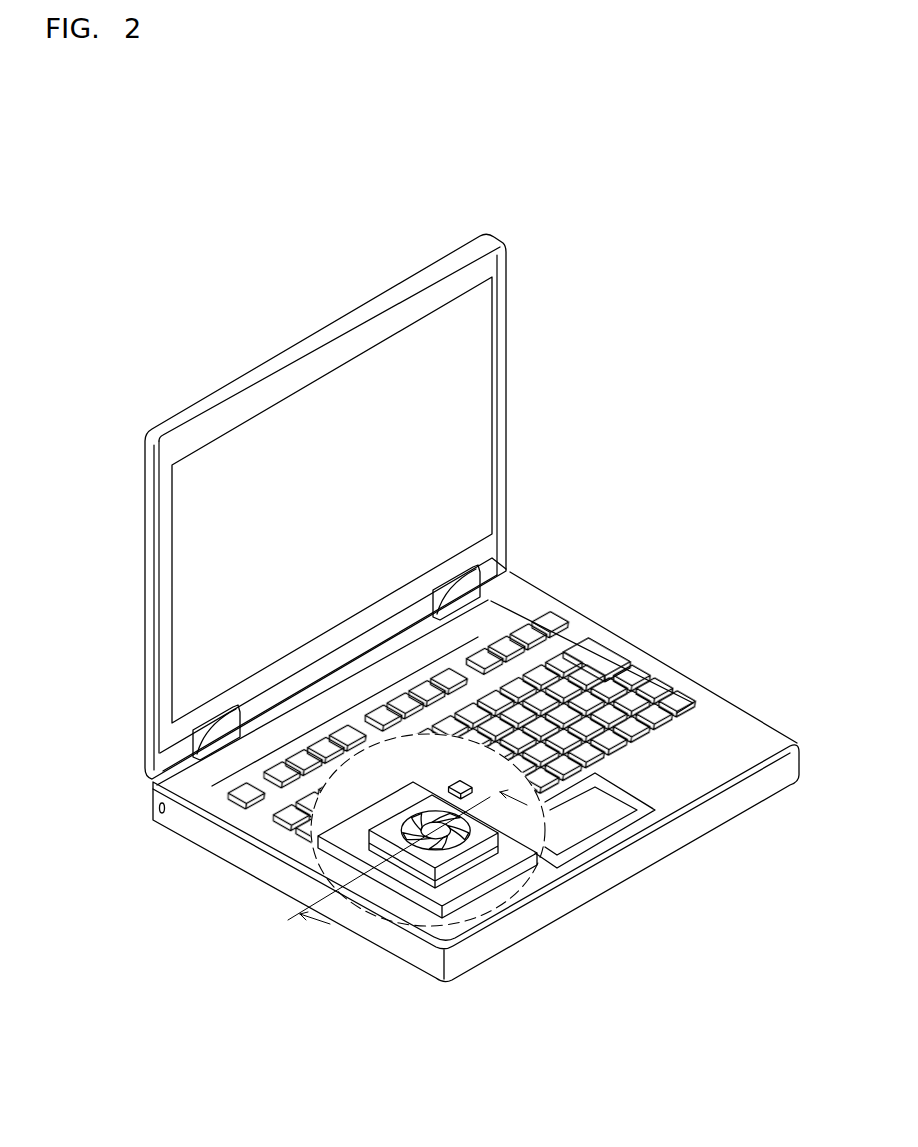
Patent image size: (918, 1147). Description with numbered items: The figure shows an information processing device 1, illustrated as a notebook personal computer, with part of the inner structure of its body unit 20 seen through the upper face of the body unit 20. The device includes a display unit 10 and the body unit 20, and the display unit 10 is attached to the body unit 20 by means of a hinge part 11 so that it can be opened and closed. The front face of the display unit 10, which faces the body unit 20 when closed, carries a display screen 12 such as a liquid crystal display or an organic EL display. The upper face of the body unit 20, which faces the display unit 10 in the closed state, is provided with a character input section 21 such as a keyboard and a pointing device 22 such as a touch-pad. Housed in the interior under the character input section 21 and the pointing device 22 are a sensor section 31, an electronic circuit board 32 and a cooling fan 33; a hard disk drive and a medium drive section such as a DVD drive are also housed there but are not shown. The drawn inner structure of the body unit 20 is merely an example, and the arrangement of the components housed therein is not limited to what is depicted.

The information processing device 1 is at (166, 259).
The display unit 10 is at (217, 396).
The hinge part 11 is at (221, 737).
The display screen 12 is at (487, 445).
The body unit 20 is at (733, 697).
The character input section 21 is at (574, 682).
The pointing device 22 is at (594, 823).
The sensor section 31 is at (457, 787).
The electronic circuit board 32 is at (418, 792).
The cooling fan 33 is at (410, 823).